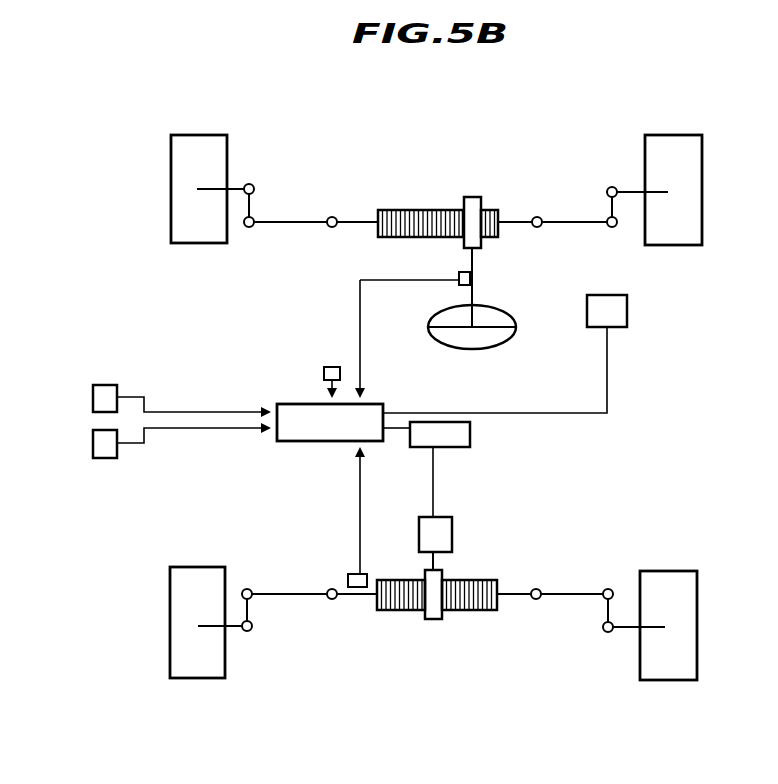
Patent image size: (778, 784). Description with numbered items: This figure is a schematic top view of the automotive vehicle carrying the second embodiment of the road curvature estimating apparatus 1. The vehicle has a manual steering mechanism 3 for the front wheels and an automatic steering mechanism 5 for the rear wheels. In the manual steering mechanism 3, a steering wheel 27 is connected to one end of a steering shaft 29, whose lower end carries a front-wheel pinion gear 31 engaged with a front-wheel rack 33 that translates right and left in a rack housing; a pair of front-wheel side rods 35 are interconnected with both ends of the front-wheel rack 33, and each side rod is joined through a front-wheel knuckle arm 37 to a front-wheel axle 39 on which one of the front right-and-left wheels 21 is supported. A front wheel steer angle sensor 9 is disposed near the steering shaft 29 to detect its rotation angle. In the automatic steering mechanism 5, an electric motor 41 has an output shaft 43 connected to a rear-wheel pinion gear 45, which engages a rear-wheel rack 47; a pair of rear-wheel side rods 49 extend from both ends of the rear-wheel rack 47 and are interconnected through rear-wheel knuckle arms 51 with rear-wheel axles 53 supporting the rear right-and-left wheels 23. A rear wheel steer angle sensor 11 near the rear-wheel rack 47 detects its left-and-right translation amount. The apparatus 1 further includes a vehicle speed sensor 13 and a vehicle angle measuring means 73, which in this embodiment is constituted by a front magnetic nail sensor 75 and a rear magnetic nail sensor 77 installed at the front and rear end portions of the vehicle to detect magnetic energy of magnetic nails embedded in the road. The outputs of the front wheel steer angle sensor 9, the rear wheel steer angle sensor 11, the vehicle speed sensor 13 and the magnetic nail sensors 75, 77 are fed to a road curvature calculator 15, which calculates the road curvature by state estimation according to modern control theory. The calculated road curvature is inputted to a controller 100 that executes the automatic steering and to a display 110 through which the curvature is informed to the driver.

The road curvature estimating apparatus 1 is at (243, 358).
The manual steering mechanism 3 is at (530, 322).
The automatic steering mechanism 5 is at (535, 528).
The front wheel steer angle sensor 9 is at (471, 278).
The rear wheel steer angle sensor 11 is at (350, 574).
The vehicle speed sensor 13 is at (332, 367).
The road curvature calculator 15 is at (290, 404).
The front right-and-left wheels 21 is at (212, 135).
The rear right-and-left wheels 23 is at (202, 680).
The steering wheel 27 is at (508, 349).
The steering shaft 29 is at (476, 300).
The front-wheel pinion gear 31 is at (473, 200).
The front-wheel rack 33 is at (406, 210).
The front-wheel side rods 35 is at (334, 216).
The front-wheel knuckle arm 37 is at (252, 208).
The front-wheel axle 39 is at (236, 195).
The electric motor 41 is at (452, 532).
The output shaft 43 is at (436, 565).
The rear-wheel pinion gear 45 is at (433, 620).
The rear-wheel rack 47 is at (485, 611).
The rear-wheel side rods 49 is at (270, 590).
The rear-wheel knuckle arm 51 is at (255, 612).
The rear-wheel axle 53 is at (210, 622).
The vehicle angle measuring means 73 is at (78, 380).
The front magnetic nail sensor 75 is at (105, 385).
The rear magnetic nail sensor 77 is at (105, 458).
The controller 100 is at (470, 432).
The display 110 is at (628, 311).